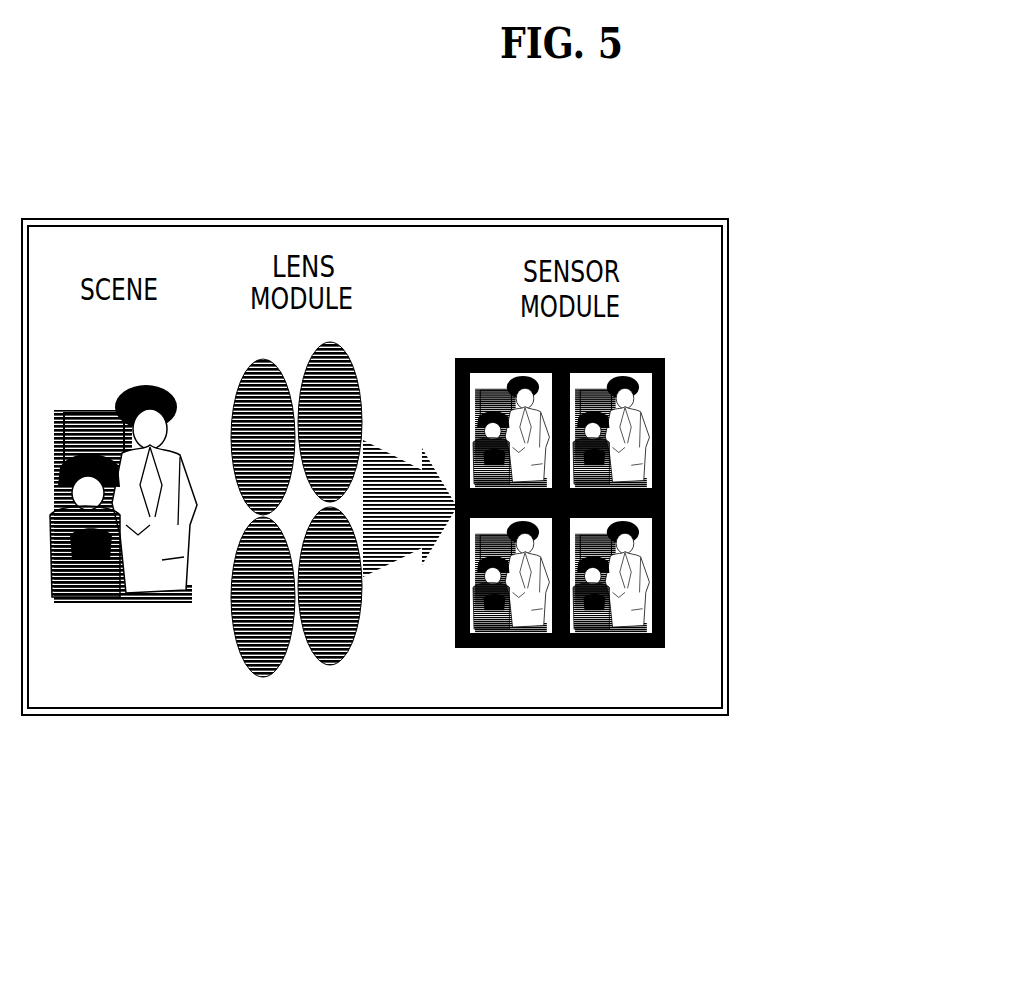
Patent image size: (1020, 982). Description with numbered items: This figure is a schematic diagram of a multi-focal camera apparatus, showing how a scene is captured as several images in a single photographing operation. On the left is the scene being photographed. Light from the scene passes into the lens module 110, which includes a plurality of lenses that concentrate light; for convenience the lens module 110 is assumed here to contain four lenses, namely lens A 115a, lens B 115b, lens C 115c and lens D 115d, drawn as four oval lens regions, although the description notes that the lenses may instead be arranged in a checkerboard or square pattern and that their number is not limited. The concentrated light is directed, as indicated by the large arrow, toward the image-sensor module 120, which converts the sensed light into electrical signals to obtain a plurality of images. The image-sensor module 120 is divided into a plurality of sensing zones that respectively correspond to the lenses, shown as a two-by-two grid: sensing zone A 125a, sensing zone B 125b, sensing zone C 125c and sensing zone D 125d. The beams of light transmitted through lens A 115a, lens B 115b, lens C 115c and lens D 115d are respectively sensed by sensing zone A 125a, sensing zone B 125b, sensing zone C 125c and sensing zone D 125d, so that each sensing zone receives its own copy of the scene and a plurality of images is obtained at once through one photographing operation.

The lens module 110 is at (251, 513).
The lens A 115a is at (263, 368).
The lens B 115b is at (335, 370).
The lens C 115c is at (263, 626).
The lens D 115d is at (335, 617).
The image-sensor module 120 is at (667, 522).
The sensing zone A 125a is at (467, 376).
The sensing zone B 125b is at (640, 361).
The sensing zone C 125c is at (525, 585).
The sensing zone D 125d is at (645, 567).